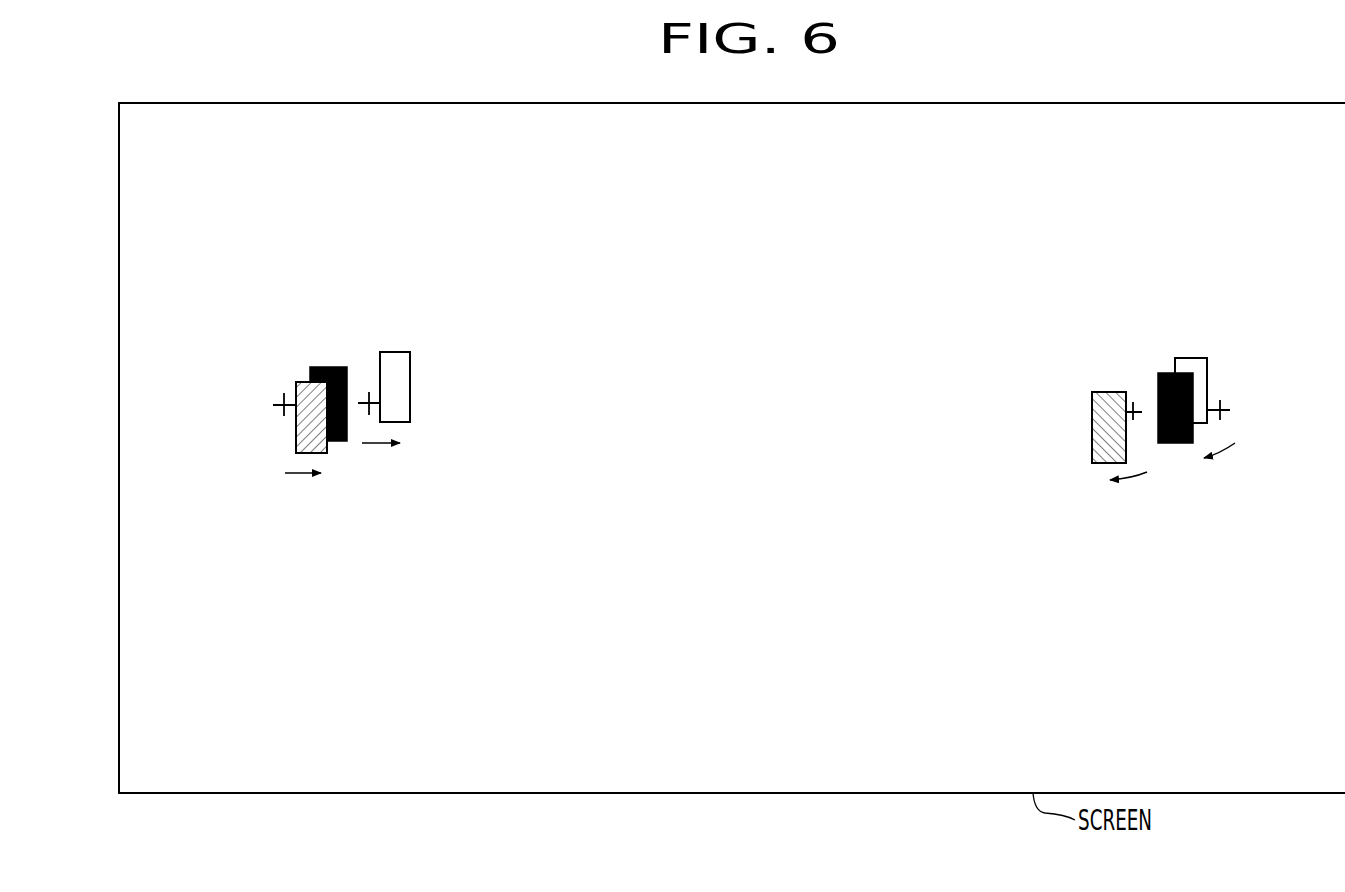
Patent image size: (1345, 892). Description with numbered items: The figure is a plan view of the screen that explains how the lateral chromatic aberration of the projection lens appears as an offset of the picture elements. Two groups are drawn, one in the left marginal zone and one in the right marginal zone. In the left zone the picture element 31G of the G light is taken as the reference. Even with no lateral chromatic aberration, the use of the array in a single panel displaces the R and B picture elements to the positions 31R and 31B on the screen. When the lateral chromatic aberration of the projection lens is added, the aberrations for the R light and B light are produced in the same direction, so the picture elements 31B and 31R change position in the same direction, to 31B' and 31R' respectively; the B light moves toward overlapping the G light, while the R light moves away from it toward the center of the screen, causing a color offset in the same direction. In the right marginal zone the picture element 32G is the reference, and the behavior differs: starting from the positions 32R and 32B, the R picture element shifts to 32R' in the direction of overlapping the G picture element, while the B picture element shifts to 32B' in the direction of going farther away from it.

The B picture element position 31B is at (285, 355).
The displaced B picture element position 31B' is at (272, 443).
The G picture element 31G is at (333, 443).
The R picture element position 31R is at (380, 335).
The displaced R picture element position 31R' is at (448, 408).
The B picture element position 32B is at (1114, 354).
The displaced B picture element position 32B' is at (1110, 473).
The G picture element 32G is at (1180, 443).
The R picture element position 32R is at (1250, 365).
The displaced R picture element position 32R' is at (1204, 338).